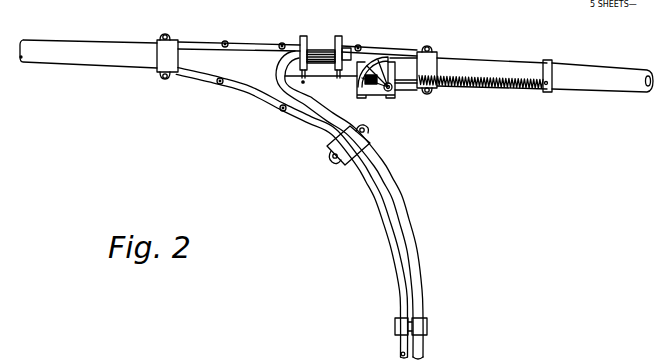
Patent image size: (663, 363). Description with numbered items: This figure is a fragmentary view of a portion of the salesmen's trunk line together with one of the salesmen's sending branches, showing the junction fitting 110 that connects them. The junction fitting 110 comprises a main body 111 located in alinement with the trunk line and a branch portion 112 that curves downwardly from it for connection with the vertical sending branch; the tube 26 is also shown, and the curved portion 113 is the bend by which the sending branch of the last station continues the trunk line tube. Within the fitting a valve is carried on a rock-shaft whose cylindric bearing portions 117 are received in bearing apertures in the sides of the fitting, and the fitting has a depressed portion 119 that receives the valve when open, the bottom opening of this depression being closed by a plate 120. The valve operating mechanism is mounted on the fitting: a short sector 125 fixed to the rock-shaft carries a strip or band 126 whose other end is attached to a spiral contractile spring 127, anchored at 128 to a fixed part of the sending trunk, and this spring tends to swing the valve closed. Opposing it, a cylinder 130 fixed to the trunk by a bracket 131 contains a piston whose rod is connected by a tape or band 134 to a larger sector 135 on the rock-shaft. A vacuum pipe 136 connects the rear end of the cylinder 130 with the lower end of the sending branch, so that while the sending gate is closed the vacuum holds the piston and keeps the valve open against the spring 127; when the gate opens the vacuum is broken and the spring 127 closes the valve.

The handle tube 26 is at (84, 42).
The junction fitting 110 is at (199, 39).
The main body 111 is at (232, 62).
The branch portion 112 is at (253, 85).
The curved portion 113 is at (396, 203).
The vacuum pipe 136 is at (338, 125).
The cylinder 130 is at (305, 44).
The bracket 131 is at (336, 42).
The tape or band 134 is at (347, 54).
The depressed portion 119 is at (351, 87).
The plate 120 is at (369, 88).
The larger sector 135 is at (376, 58).
The short sector 125 is at (373, 92).
The cylindric bearing portion 117 is at (398, 95).
The strip or band 126 is at (398, 63).
The spiral contractile spring 127 is at (523, 88).
The spring attachment 128 is at (548, 85).